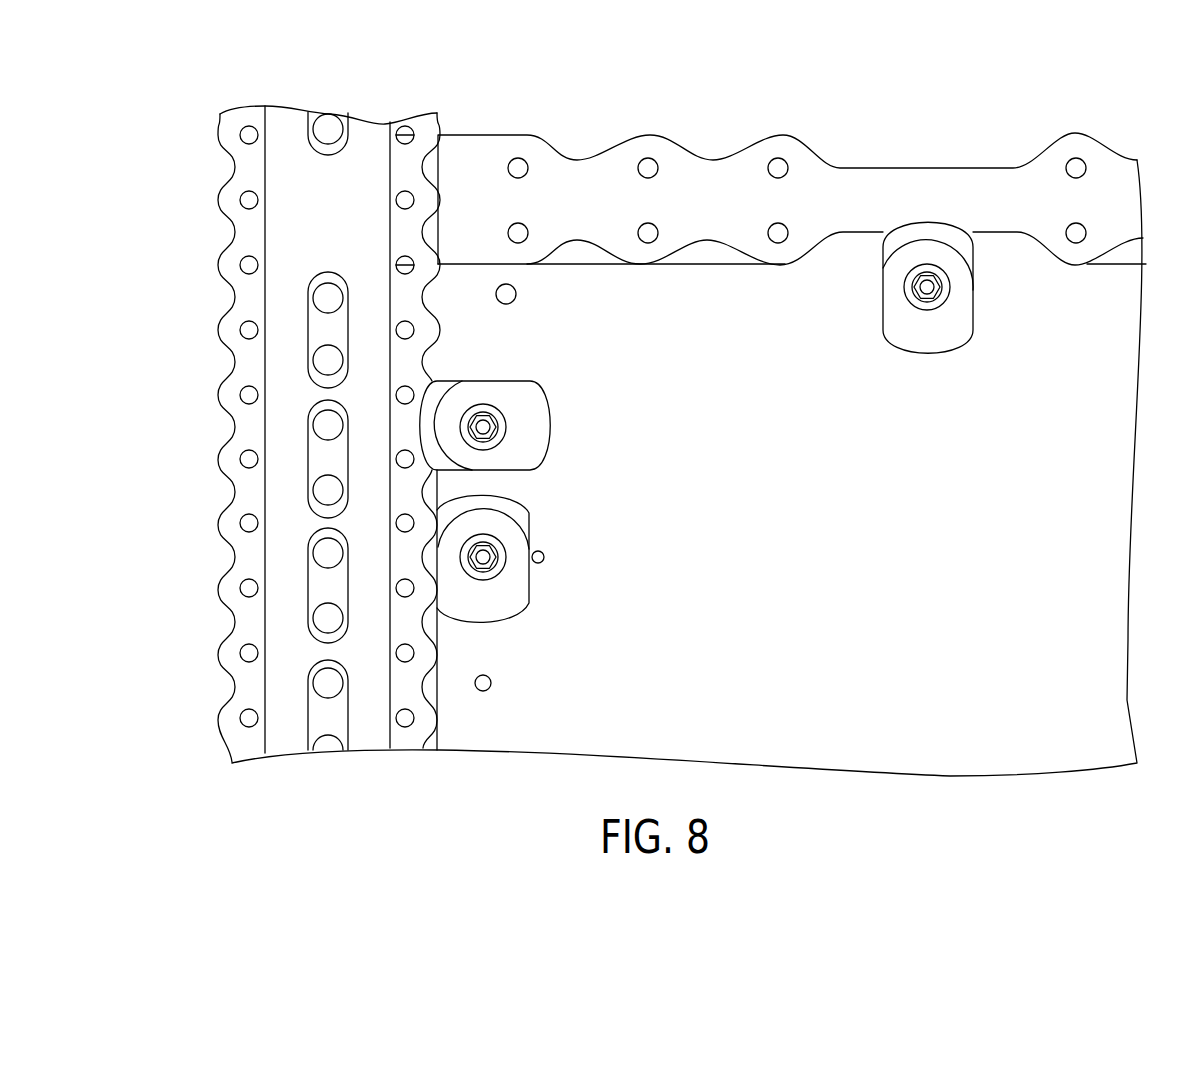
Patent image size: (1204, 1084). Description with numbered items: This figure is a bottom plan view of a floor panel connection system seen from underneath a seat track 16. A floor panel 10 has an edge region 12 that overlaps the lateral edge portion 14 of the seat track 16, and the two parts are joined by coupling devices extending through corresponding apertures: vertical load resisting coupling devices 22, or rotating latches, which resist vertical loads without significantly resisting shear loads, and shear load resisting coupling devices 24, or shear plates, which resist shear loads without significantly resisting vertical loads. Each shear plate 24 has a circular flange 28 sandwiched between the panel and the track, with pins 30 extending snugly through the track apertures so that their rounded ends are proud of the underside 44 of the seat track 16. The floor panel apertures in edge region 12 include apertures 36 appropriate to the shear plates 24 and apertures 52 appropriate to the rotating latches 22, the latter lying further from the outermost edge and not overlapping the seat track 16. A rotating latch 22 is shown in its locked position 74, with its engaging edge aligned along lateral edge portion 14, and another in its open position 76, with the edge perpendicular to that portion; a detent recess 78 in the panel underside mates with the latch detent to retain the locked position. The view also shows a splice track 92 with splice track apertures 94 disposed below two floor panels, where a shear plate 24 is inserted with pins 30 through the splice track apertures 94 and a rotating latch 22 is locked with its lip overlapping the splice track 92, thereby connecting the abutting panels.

The floor panel 10 is at (1011, 541).
The edge region 12 is at (436, 291).
The lateral edge portion 14 is at (418, 641).
The seat track 16 is at (243, 483).
The vertical load resisting coupling device 22 is at (554, 366).
The shear load resisting coupling device 24 is at (730, 285).
The circular flange 28 is at (695, 256).
The pin 30 is at (789, 229).
The apertures appropriate to shear plates 36 is at (410, 728).
The underside 44 is at (366, 128).
The apertures appropriate to rotating latches 52 is at (491, 680).
The locked position 74 is at (578, 426).
The open position 76 is at (553, 600).
The detent recess 78 is at (544, 556).
The splice track 92 is at (880, 178).
The splice track apertures 94 is at (779, 158).